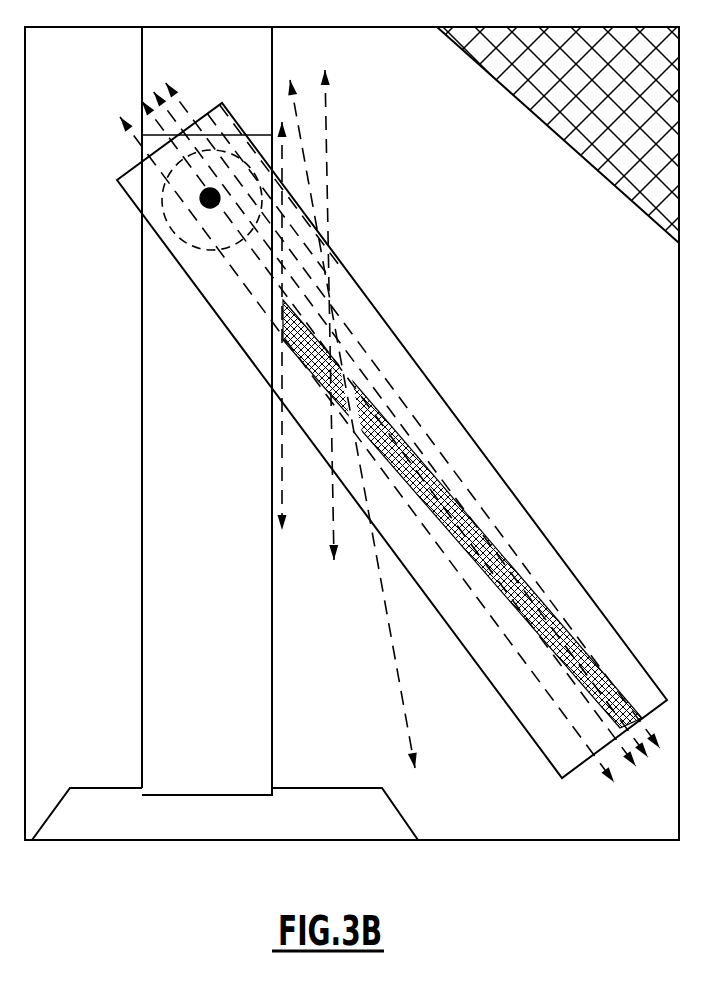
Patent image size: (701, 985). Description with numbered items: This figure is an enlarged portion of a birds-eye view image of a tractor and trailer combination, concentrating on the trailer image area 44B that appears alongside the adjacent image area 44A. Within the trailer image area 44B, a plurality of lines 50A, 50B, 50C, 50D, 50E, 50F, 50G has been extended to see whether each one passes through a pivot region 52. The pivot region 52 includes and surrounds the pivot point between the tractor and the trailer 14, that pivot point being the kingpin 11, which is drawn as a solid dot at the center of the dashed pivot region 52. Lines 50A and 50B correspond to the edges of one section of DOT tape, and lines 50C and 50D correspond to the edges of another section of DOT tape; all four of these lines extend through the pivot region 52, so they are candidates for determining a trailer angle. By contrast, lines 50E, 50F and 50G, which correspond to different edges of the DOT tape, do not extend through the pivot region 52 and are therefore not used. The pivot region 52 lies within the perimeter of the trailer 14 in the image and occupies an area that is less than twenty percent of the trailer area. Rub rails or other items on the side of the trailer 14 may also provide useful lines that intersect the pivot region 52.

The kingpin 11 is at (203, 204).
The trailer 14 is at (258, 370).
The pivot region 52 is at (205, 250).
The first housing portion 44A is at (142, 690).
The trailer image area 44B is at (530, 735).
The line 50A is at (137, 139).
The line 50B is at (153, 125).
The line 50C is at (158, 85).
The line 50D is at (193, 102).
The line 50E is at (282, 487).
The line 50F is at (333, 527).
The line 50G is at (397, 668).